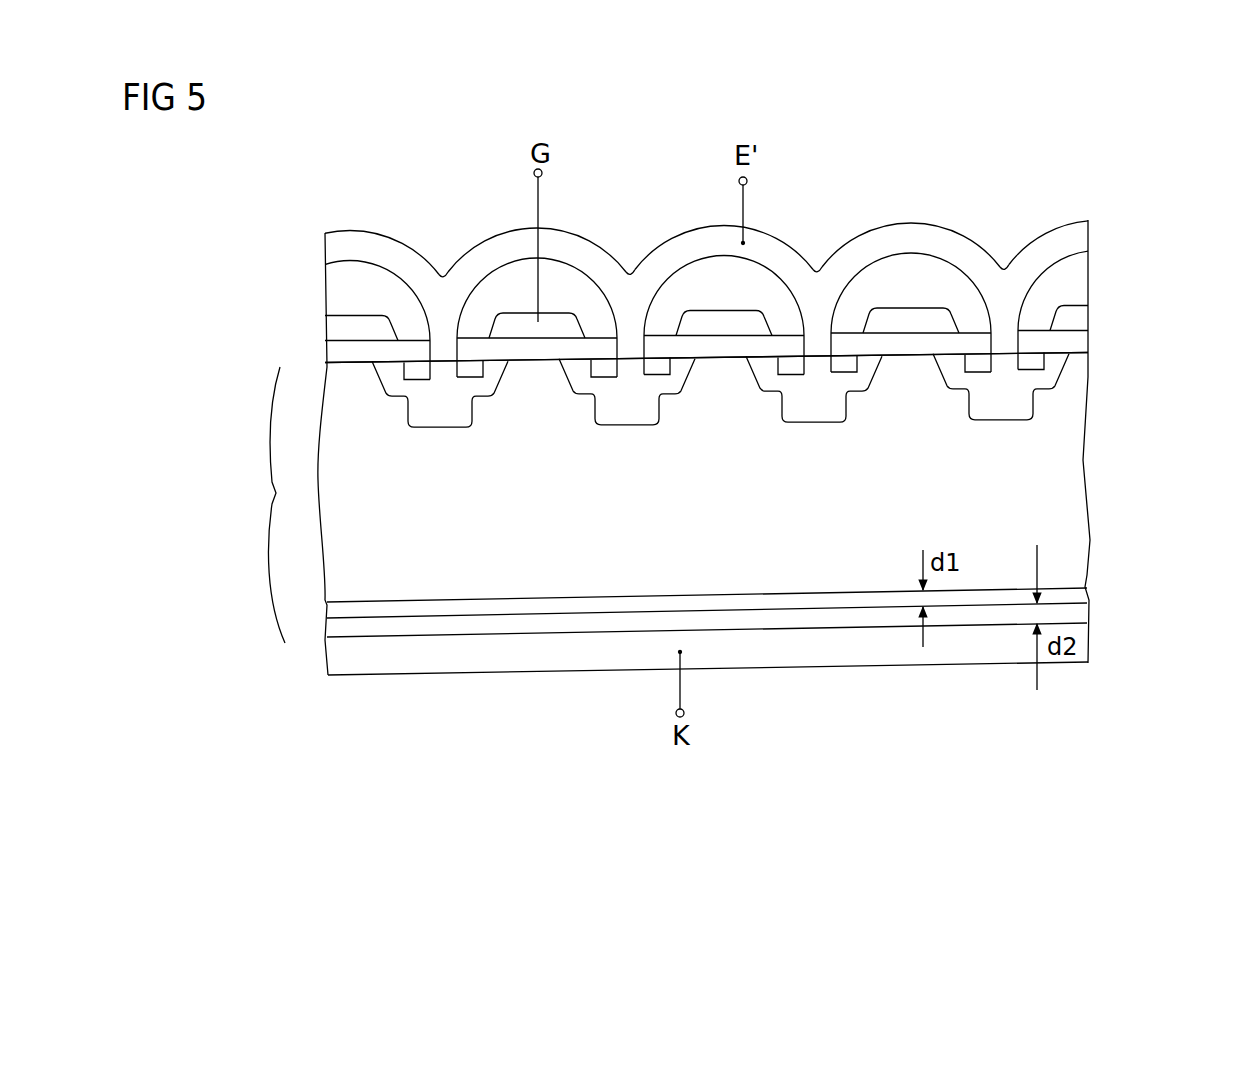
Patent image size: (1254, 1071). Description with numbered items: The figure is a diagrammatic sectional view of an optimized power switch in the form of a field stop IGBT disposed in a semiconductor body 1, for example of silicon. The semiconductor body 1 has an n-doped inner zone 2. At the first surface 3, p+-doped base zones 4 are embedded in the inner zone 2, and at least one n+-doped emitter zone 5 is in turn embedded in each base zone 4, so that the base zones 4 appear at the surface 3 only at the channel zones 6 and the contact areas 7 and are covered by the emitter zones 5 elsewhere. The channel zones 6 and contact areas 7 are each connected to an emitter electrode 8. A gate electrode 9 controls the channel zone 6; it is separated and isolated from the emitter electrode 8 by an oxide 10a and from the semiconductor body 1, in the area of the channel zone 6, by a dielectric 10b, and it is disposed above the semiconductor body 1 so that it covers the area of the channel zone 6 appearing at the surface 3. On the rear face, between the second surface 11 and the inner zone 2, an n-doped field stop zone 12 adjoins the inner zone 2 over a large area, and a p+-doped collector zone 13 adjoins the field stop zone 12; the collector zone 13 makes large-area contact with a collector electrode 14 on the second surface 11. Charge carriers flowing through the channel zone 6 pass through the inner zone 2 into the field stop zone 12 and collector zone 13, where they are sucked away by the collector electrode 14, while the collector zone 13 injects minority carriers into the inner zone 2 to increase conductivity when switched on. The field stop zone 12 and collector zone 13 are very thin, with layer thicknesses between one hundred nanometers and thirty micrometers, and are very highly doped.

The semiconductor body 1 is at (272, 494).
The inner zone 2 is at (1077, 507).
The first surface 3 is at (347, 360).
The base zone 4 is at (1007, 407).
The emitter zone 5 is at (660, 360).
The channel zone 6 is at (872, 357).
The contact area 7 is at (627, 363).
The emitter electrode 8 is at (930, 240).
The gate electrode 9 is at (880, 313).
The oxide 10a is at (1077, 277).
The dielectric 10b is at (1073, 340).
The second surface 11 is at (349, 637).
The field stop zone 12 is at (583, 600).
The collector zone 13 is at (428, 623).
The collector electrode 14 is at (505, 657).